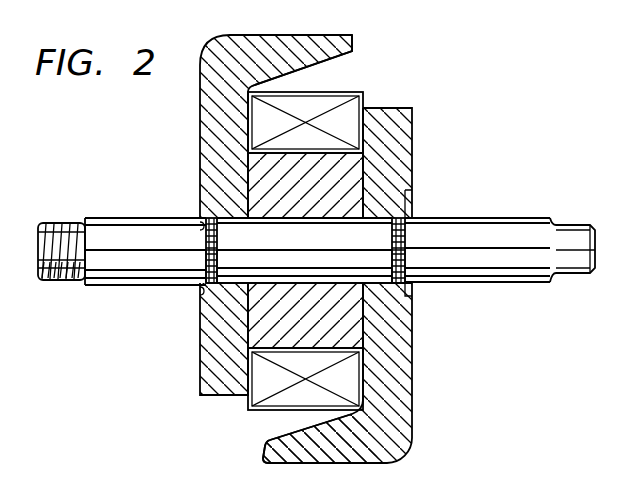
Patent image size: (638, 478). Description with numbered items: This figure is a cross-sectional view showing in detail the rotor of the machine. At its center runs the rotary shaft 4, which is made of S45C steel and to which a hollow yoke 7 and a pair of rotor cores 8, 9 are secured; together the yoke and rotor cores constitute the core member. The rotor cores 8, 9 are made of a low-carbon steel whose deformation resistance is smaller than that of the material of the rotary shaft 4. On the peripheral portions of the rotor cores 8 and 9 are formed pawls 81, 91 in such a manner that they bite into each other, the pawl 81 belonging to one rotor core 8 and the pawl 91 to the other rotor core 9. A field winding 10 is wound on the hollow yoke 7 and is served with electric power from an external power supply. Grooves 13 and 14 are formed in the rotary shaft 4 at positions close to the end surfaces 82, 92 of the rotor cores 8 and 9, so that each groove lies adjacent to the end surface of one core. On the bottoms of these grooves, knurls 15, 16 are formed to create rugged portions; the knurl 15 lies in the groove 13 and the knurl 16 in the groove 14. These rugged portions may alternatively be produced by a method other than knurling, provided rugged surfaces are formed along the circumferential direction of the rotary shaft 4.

The rotary shaft 4 is at (507, 228).
The hollow yoke 7 is at (357, 180).
The rotor core 8 is at (205, 360).
The rotor core 9 is at (403, 400).
The field winding 10 is at (345, 110).
The groove 13 is at (206, 232).
The groove 14 is at (405, 230).
The knurl 15 is at (206, 258).
The knurl 16 is at (405, 258).
The pawl 81 is at (308, 57).
The end surface 82 is at (200, 163).
The pawl 91 is at (290, 447).
The end surface 92 is at (412, 191).